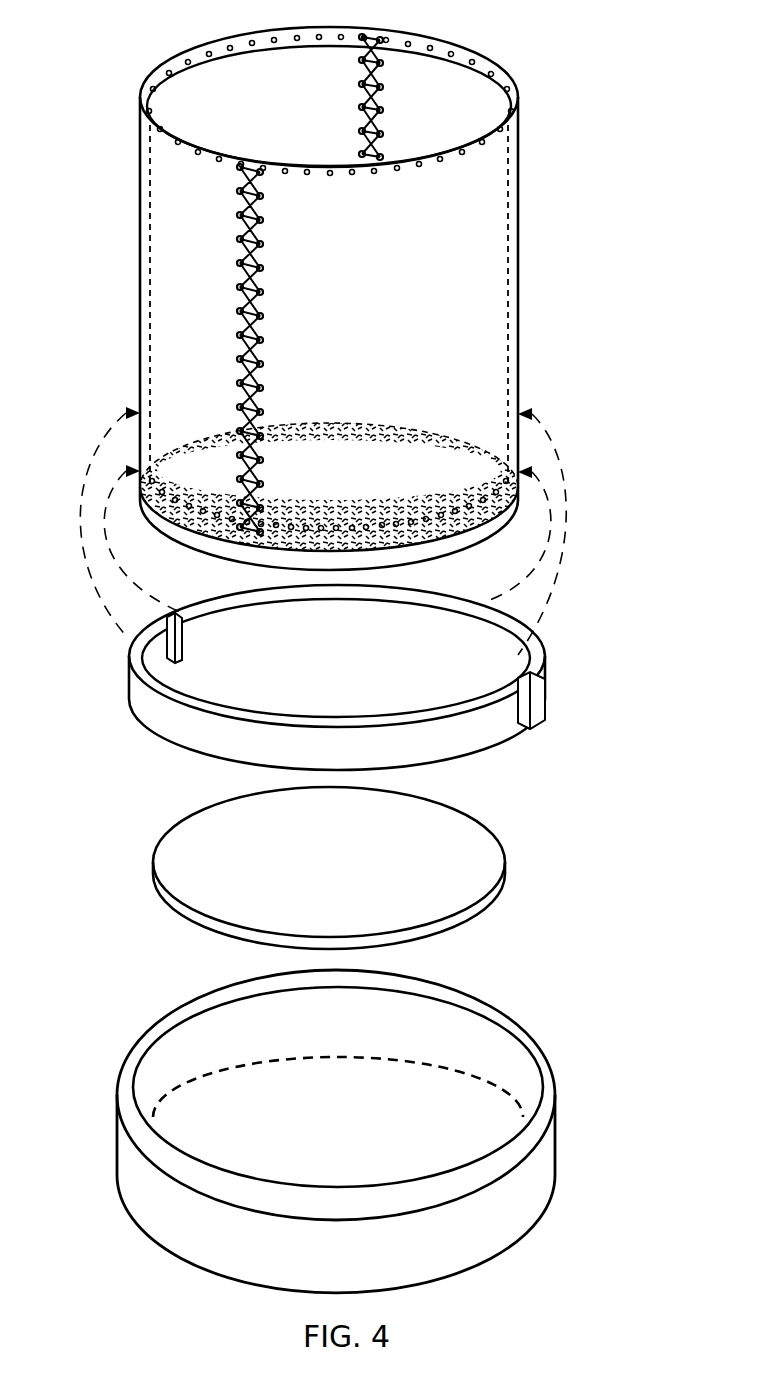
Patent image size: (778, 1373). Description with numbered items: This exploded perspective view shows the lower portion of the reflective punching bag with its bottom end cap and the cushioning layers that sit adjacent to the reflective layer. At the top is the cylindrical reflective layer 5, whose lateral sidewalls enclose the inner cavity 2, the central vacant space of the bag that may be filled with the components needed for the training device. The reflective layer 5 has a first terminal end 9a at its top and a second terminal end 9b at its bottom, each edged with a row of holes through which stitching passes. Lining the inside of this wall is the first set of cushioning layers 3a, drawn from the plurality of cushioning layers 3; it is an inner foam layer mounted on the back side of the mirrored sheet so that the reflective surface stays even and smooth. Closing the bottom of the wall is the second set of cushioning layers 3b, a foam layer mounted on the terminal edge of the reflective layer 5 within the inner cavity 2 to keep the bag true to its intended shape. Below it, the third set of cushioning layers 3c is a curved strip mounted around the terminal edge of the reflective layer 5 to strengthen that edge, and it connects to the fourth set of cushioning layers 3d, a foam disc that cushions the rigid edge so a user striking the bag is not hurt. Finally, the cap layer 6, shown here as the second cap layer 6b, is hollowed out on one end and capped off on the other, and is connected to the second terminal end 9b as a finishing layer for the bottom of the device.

The inner cavity 2 is at (324, 88).
The reflective layer 5 is at (324, 99).
The first terminal end 9a is at (165, 60).
The second terminal end 9b is at (405, 548).
The plurality of cushioning layers 3 is at (345, 491).
The first set of cushioning layers 3a is at (518, 315).
The second set of cushioning layers 3b is at (329, 467).
The third set of cushioning layers 3c is at (145, 712).
The fourth set of cushioning layers 3d is at (493, 907).
The cap layer 6 is at (380, 1131).
The second cap layer 6b is at (540, 1190).